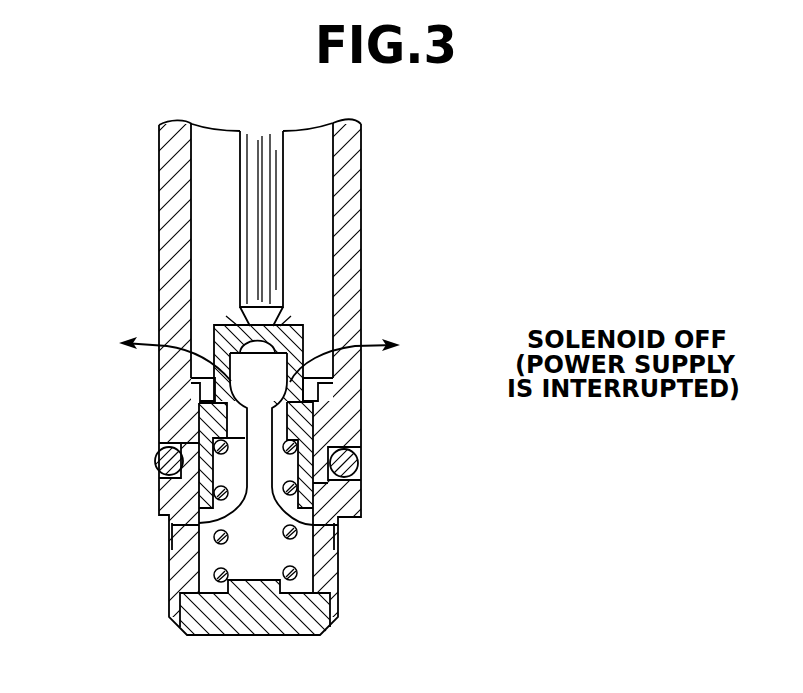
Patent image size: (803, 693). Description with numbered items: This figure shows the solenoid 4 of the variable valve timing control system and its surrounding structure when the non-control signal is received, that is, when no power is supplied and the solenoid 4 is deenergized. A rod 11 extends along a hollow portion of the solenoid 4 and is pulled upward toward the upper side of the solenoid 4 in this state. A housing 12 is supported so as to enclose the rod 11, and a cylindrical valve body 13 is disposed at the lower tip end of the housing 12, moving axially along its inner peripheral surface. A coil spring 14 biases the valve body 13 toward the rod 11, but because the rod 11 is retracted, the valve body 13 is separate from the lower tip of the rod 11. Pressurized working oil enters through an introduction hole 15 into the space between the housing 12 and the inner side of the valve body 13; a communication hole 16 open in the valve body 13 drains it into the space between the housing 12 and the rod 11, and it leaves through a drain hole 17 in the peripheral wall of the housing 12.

The solenoid 4 is at (148, 190).
The rod 11 is at (268, 204).
The housing 12 is at (356, 253).
The valve body 13 is at (222, 324).
The coil spring 14 is at (322, 572).
The introduction hole 15 is at (200, 531).
The communication hole 16 is at (230, 352).
The drain hole 17 is at (172, 354).